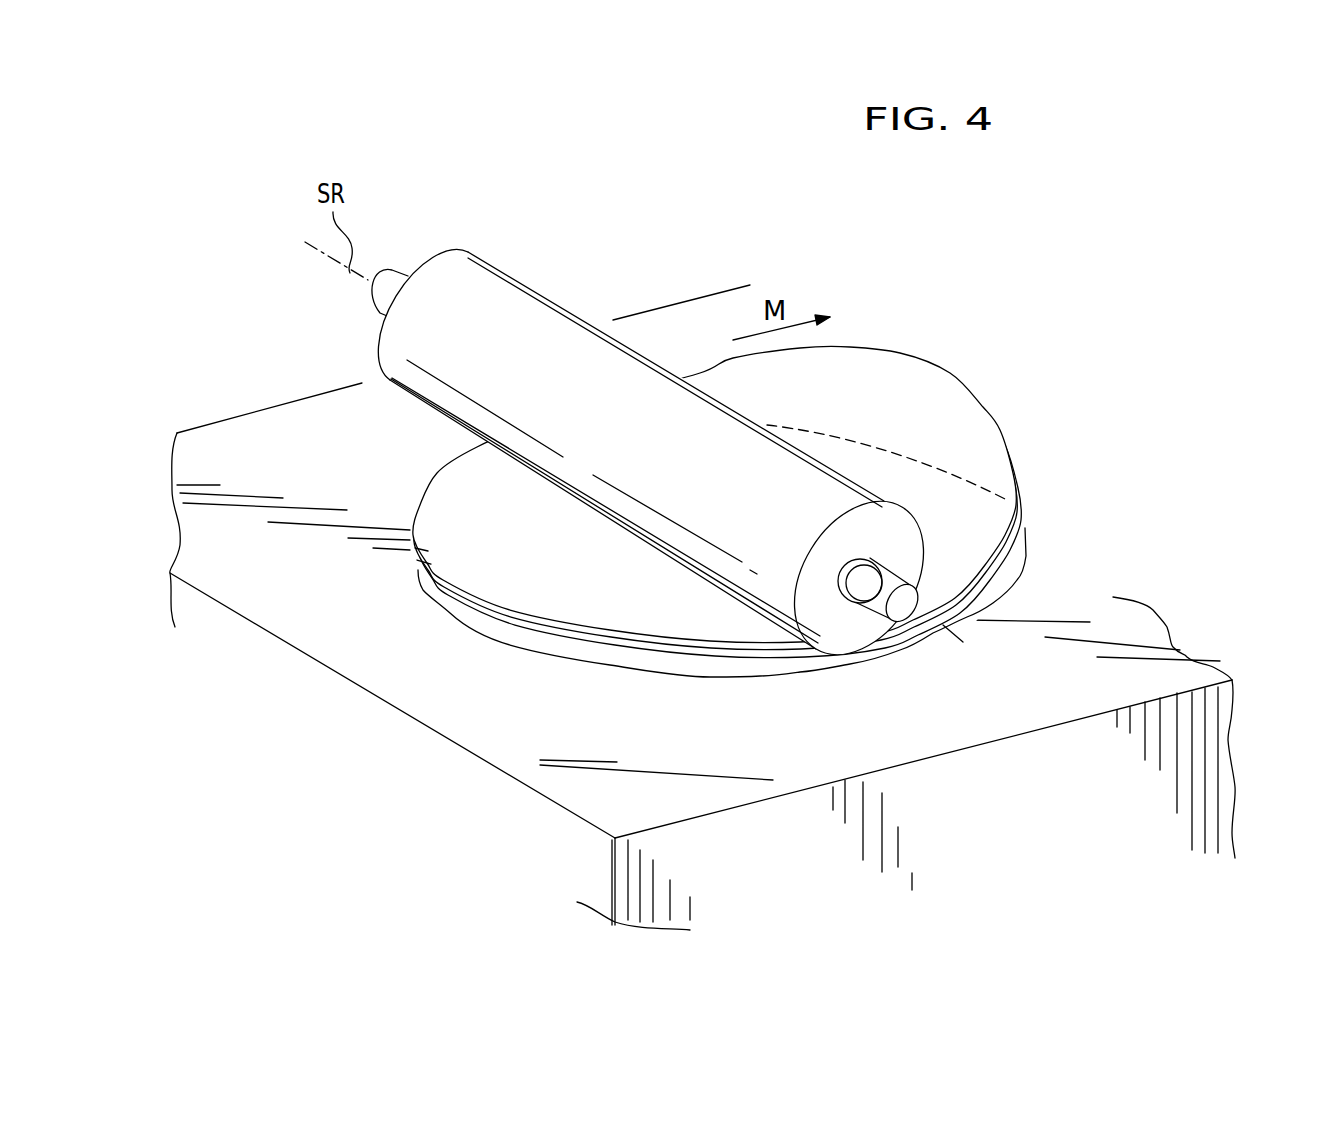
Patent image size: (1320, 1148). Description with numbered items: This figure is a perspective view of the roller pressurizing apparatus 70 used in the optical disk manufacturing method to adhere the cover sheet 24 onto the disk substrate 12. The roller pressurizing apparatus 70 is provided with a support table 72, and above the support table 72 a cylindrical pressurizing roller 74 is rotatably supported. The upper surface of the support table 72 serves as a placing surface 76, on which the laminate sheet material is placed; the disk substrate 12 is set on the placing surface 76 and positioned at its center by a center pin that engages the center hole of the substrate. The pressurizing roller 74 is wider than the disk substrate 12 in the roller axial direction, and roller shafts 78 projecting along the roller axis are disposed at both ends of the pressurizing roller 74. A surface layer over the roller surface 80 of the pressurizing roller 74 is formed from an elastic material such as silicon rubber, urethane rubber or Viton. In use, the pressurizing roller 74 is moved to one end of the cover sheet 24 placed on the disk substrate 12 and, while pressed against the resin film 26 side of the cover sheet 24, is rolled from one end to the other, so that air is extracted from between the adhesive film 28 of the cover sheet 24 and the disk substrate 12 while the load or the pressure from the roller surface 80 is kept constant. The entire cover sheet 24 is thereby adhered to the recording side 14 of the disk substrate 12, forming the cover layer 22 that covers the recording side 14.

The disk substrate 12 is at (1000, 598).
The recording side 14 is at (1026, 557).
The cover layer 22 is at (717, 645).
The cover sheet 24 is at (1008, 410).
The resin film 26 is at (1014, 480).
The adhesive film 28 is at (1018, 522).
The roller pressurizing apparatus 70 is at (590, 168).
The support table 72 is at (270, 408).
The pressurizing roller 74 is at (470, 237).
The placing surface 76 is at (884, 752).
The roller shafts 78 is at (378, 313).
The roller surface 80 is at (553, 323).